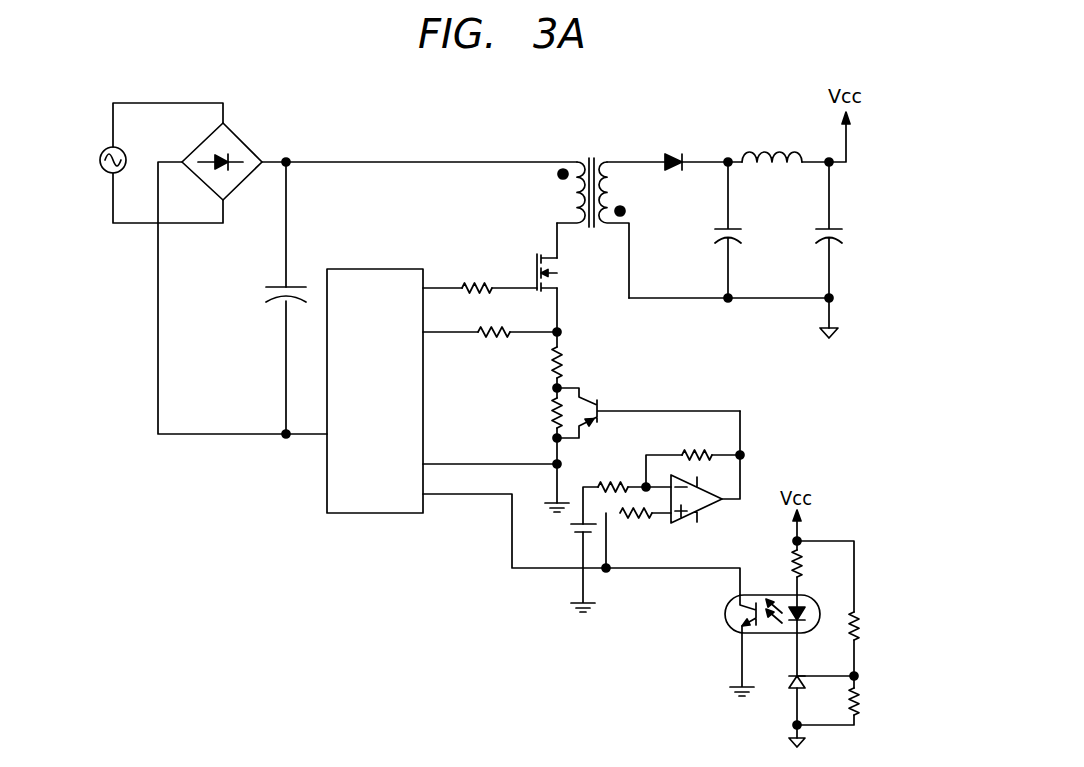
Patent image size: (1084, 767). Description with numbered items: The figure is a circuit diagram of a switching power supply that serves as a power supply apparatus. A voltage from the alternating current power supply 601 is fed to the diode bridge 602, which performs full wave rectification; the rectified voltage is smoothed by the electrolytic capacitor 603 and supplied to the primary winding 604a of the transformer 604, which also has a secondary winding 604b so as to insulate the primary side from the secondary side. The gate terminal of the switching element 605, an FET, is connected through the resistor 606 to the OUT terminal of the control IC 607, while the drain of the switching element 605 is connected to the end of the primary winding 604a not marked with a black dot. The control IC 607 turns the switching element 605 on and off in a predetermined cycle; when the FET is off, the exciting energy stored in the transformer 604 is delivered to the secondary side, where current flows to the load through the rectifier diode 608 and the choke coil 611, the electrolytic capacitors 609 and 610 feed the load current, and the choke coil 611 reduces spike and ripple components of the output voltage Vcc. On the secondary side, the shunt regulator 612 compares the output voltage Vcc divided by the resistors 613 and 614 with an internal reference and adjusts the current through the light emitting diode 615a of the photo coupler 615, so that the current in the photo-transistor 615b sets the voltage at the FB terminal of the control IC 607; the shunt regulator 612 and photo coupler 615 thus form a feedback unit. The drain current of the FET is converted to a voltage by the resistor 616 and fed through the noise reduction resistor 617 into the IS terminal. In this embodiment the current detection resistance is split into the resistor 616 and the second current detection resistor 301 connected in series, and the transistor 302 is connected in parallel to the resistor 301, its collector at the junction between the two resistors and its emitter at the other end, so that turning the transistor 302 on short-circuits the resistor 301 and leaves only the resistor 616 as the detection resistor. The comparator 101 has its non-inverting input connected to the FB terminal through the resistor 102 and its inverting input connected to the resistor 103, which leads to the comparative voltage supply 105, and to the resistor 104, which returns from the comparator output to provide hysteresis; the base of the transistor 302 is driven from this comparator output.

The alternating current power supply 601 is at (101, 176).
The diode bridge 602 is at (238, 136).
The electrolytic capacitor 603 is at (262, 295).
The transformer 604 is at (588, 201).
The primary winding 604a is at (568, 196).
The secondary winding 604b is at (612, 188).
The switching element 605 is at (534, 272).
The resistor 606 is at (470, 284).
The control IC 607 is at (372, 268).
The rectifier diode 608 is at (673, 158).
The electrolytic capacitor 609 is at (744, 236).
The electrolytic capacitor 610 is at (846, 236).
The choke coil 611 is at (780, 151).
The shunt regulator 612 is at (790, 681).
The resistor 613 is at (862, 630).
The resistor 614 is at (862, 705).
The photo coupler 615 is at (790, 572).
The light emitting diode 615a is at (812, 613).
The photo-transistor 615b is at (737, 616).
The resistor 616 is at (565, 357).
The noise reduction resistor 617 is at (493, 341).
The resistor 301 is at (552, 416).
The transistor 302 is at (599, 398).
The comparator 101 is at (703, 512).
The resistor 102 is at (633, 522).
The resistor 103 is at (628, 480).
The resistor 104 is at (713, 450).
The comparative voltage supply 105 is at (575, 532).